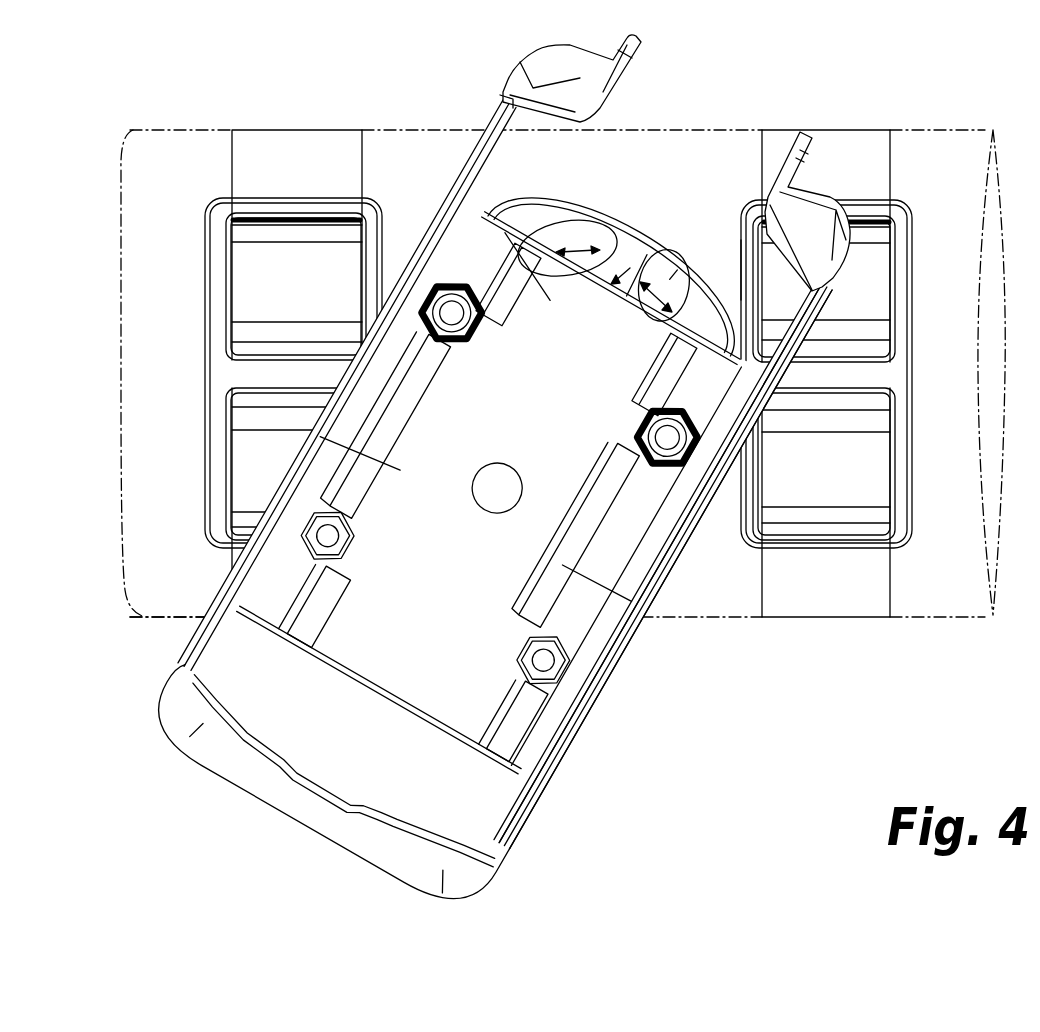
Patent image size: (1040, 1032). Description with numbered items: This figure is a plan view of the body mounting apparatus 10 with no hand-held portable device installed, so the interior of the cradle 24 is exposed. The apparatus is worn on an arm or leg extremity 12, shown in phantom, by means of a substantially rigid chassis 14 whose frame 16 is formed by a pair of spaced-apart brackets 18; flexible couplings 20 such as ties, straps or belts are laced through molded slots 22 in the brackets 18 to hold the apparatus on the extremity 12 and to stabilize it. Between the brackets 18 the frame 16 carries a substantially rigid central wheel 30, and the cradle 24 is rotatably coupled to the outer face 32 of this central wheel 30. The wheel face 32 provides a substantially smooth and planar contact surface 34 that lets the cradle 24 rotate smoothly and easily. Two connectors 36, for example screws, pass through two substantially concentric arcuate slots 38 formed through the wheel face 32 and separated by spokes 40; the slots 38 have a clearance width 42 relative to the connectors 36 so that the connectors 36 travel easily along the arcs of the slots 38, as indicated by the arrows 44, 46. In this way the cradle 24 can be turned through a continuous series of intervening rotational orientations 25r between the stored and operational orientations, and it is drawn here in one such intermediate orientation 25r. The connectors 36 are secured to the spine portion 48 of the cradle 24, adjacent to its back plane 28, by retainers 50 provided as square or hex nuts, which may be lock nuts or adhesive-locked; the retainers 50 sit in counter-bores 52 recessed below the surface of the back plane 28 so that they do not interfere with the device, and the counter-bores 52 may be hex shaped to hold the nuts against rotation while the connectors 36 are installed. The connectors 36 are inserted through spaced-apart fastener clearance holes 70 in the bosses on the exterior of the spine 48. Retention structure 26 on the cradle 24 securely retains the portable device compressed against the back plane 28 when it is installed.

The body mounting apparatus 10 is at (526, 474).
The arm or leg extremity 12 is at (176, 603).
The chassis 14 is at (740, 313).
The frame 16 is at (392, 280).
The brackets 18 is at (205, 205).
The flexible couplings 20 is at (270, 148).
The molded slots 22 is at (312, 220).
The cradle 24 is at (533, 813).
The intervening rotational orientations 25r is at (293, 843).
The retention structure 26 is at (490, 112).
The back plane 28 is at (600, 620).
The central wheel 30 is at (593, 207).
The face 32 is at (523, 213).
The contact surface 34 is at (657, 253).
The connectors 36 is at (462, 328).
The slots 38 is at (550, 240).
The spokes 40 is at (611, 253).
The clearance width 42 is at (645, 253).
The arrow 44 is at (570, 233).
The arrow 46 is at (738, 308).
The spine portion 48 is at (541, 434).
The retainers 50 is at (470, 330).
The counter-bores 52 is at (452, 345).
The fastener clearance holes 70 is at (340, 547).